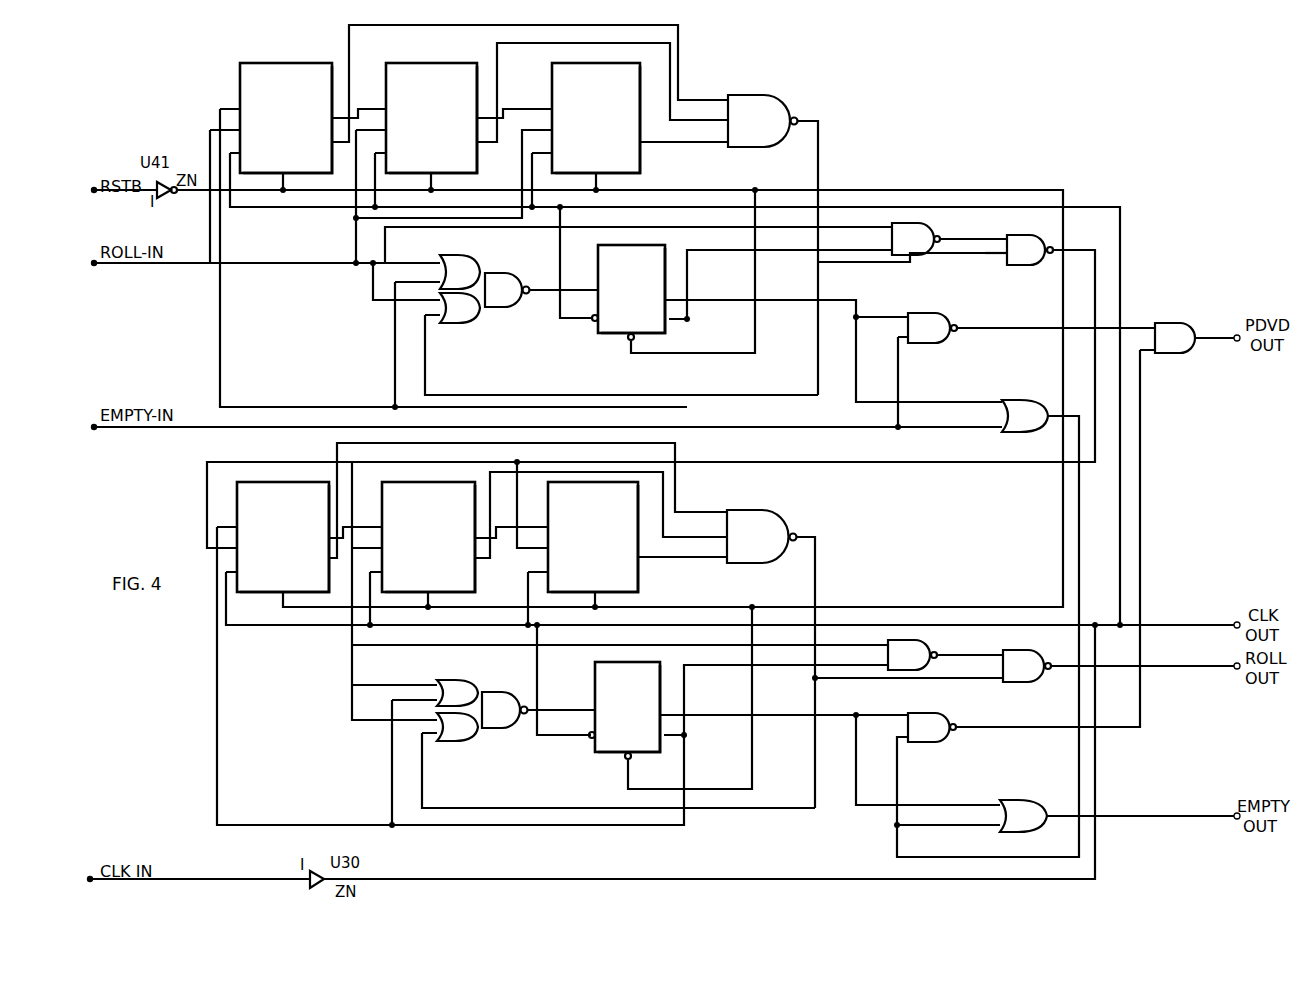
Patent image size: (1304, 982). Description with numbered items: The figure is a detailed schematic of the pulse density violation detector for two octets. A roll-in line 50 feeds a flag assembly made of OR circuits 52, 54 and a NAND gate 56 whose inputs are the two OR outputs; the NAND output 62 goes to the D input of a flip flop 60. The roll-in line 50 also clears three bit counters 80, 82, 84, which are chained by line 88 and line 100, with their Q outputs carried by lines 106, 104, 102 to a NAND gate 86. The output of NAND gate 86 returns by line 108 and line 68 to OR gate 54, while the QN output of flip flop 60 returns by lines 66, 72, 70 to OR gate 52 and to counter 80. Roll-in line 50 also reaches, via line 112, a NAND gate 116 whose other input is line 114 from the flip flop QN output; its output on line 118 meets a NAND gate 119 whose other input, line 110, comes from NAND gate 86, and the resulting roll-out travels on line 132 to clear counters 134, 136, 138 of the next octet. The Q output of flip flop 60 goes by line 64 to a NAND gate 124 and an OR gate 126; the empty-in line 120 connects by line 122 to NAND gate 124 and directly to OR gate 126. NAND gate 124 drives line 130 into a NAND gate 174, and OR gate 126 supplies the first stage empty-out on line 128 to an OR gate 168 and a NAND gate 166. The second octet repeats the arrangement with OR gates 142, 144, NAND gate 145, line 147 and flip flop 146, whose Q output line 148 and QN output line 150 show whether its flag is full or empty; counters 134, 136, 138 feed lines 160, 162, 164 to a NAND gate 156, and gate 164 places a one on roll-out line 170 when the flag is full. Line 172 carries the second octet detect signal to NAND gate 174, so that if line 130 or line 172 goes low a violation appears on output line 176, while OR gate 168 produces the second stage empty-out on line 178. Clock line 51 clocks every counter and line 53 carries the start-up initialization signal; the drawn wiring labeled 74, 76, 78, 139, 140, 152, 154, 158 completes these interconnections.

The roll-in line 50 is at (186, 264).
The input clock line 51 is at (1101, 207).
The OR circuit 52 is at (448, 257).
The initialization line 53 is at (963, 189).
The OR circuit 54 is at (455, 323).
The NAND gate 56 is at (518, 307).
The flip flop 60 is at (600, 246).
The output line of NAND gate 62 is at (578, 289).
The Q output line 64 is at (672, 285).
The QN output line 66 is at (680, 326).
The feedback line 68 is at (425, 380).
The connecting line 70 is at (395, 373).
The connecting line 72 is at (220, 373).
The clear line of counter U9 74 is at (210, 229).
The clear line of counter U11 76 is at (358, 166).
The clear line of counter U43 78 is at (522, 166).
The bit counter 80 is at (255, 62).
The bit counter 82 is at (386, 90).
The bit counter 84 is at (552, 88).
The NAND gate 86 is at (772, 95).
The coupling line 88 is at (358, 113).
The coupling line 100 is at (504, 113).
The Q output line 102 is at (650, 143).
The Q output line 104 is at (497, 63).
The Q output line 106 is at (349, 32).
The output line of NAND gate 108 is at (818, 163).
The connecting line 110 is at (985, 262).
The connecting line 112 is at (638, 228).
The connecting line 114 is at (815, 250).
The NAND gate 116 is at (910, 262).
The connecting line 118 is at (966, 235).
The NAND gate 119 is at (1020, 265).
The empty-in line 120 is at (125, 430).
The connecting line 122 is at (898, 371).
The NAND gate 124 is at (942, 341).
The OR gate 126 is at (1005, 400).
The empty-out line 128 is at (1080, 414).
The output line of NAND gate 130 is at (1140, 325).
The roll-out line 132 is at (1070, 312).
The bit counter 134 is at (265, 482).
The bit counter 136 is at (415, 482).
The bit counter 138 is at (560, 505).
The carry line between counters 139 is at (352, 562).
The line to A1 and B1 inputs of gate U40 140 is at (380, 683).
The OR gate 142 is at (452, 680).
The OR gate 144 is at (448, 741).
The NAND gate 145 is at (510, 728).
The flip flop 146 is at (638, 664).
The D input line 147 is at (550, 712).
The Q output line 148 is at (724, 714).
The QN output line 150 is at (670, 745).
The line to A2 input of gate U40 152 is at (392, 760).
The carry-in line of counter U25 154 is at (216, 678).
The NAND gate 156 is at (770, 512).
The output line of NAND gate U46 158 is at (818, 570).
The counter output line 160 is at (646, 445).
The counter output line 162 is at (663, 528).
The gate 164 is at (668, 562).
The NAND gate 166 is at (915, 713).
The OR gate 168 is at (1025, 800).
The roll-out line 170 is at (1060, 672).
The detect output line 172 is at (1020, 728).
The NAND gate 174 is at (1172, 355).
The pulse density violation output line 176 is at (1216, 336).
The empty-out line 178 is at (1140, 818).